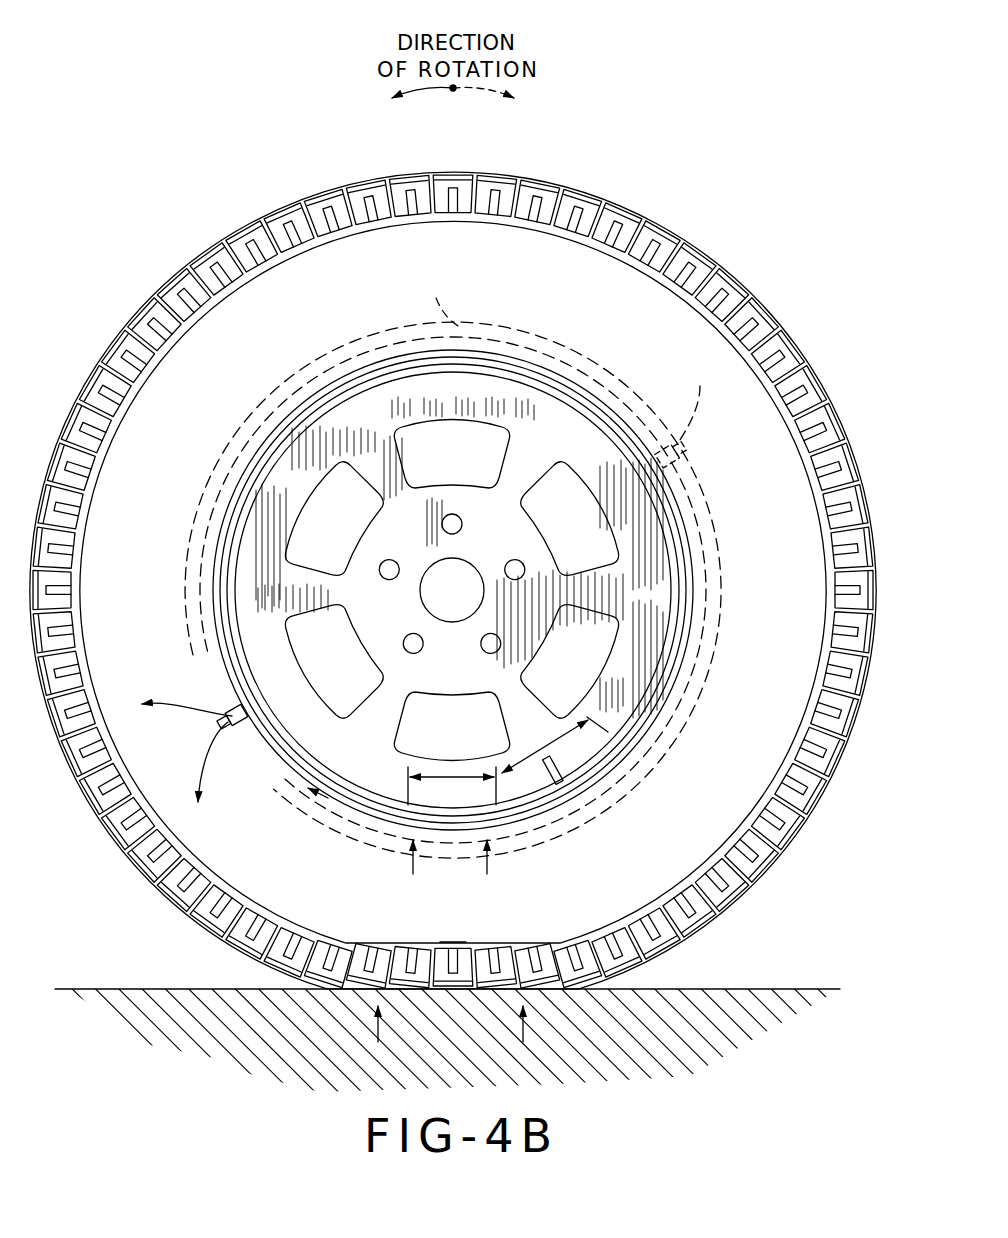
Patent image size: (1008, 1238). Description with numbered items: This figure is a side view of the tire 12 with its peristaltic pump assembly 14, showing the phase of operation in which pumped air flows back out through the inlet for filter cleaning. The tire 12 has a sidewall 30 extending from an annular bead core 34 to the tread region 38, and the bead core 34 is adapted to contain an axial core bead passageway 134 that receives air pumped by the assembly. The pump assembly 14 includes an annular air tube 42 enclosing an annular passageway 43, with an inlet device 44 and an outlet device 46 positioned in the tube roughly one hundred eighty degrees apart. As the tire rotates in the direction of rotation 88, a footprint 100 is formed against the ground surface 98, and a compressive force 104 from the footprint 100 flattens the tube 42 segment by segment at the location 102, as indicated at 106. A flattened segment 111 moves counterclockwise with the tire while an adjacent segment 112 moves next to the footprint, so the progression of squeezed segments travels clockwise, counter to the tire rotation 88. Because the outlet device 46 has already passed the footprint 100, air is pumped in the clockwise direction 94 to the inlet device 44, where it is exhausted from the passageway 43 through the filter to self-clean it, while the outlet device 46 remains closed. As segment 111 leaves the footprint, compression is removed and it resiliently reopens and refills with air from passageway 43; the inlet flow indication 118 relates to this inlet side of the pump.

The tire 12 is at (112, 297).
The peristaltic pump assembly 14 is at (694, 622).
The sidewall 30 is at (545, 268).
The bead core 34 is at (262, 398).
The tire tread region 38 is at (655, 202).
The annular air tube 42 is at (500, 358).
The annular passageway 43 is at (234, 487).
The inlet device 44 is at (238, 738).
The outlet device 46 is at (706, 446).
The direction of rotation 88 is at (430, 92).
The clockwise direction 94 is at (333, 812).
The ground surface 98 is at (735, 989).
The footprint 100 is at (476, 993).
The flattened tube location 102 is at (458, 830).
The compressive force 104 is at (375, 1032).
The flattened tube segment indication 106 is at (412, 873).
The flattened segment 111 is at (531, 755).
The adjacent segment 112 is at (452, 777).
The air inlet flow 118 is at (170, 720).
The core bead passageway 134 is at (669, 740).